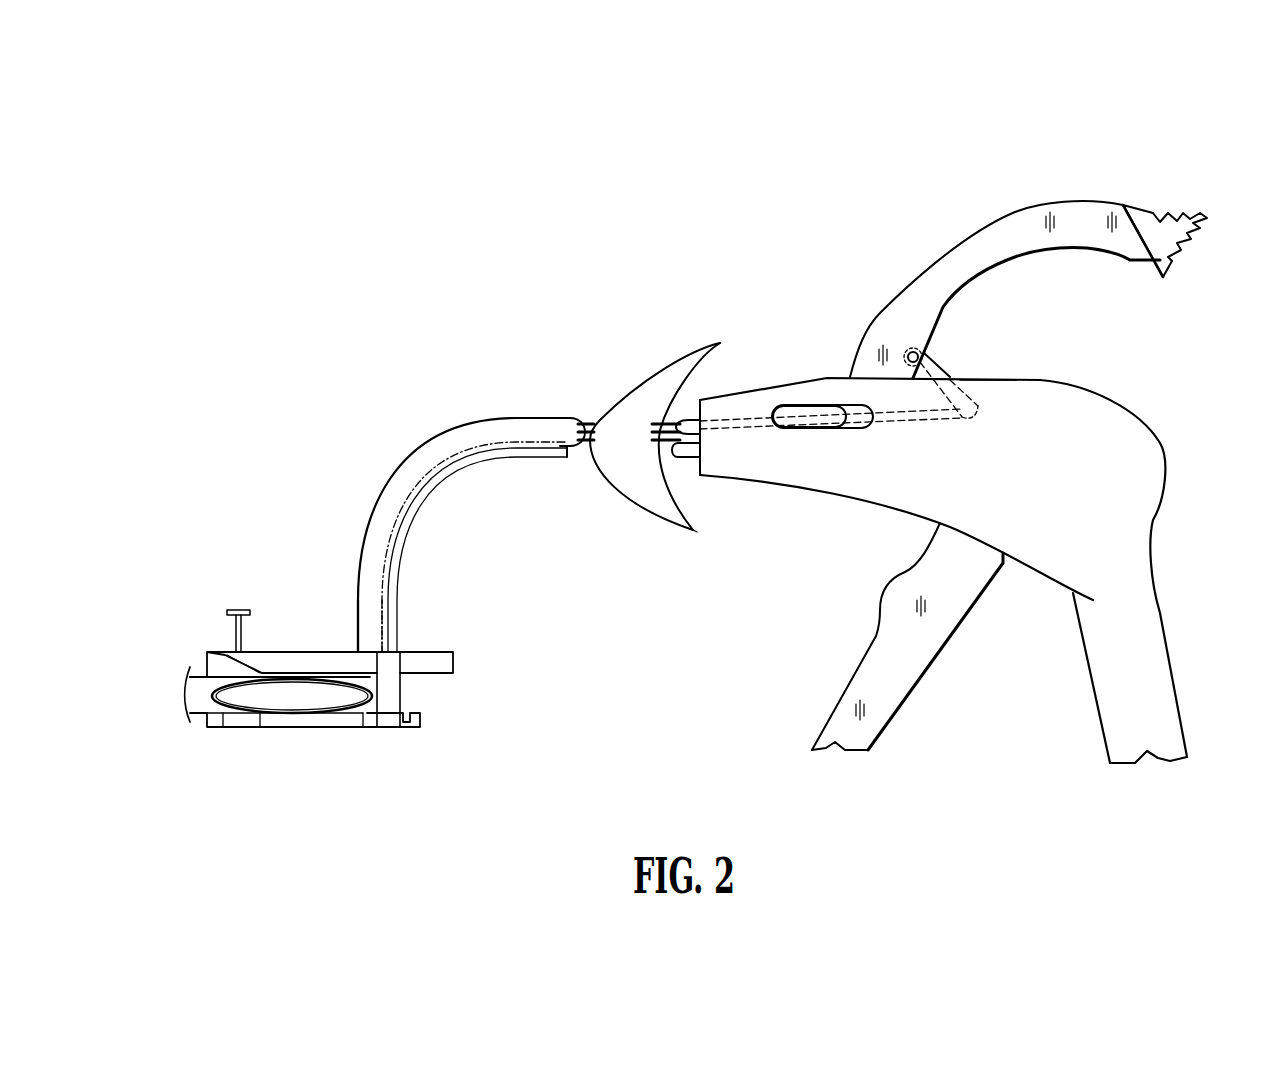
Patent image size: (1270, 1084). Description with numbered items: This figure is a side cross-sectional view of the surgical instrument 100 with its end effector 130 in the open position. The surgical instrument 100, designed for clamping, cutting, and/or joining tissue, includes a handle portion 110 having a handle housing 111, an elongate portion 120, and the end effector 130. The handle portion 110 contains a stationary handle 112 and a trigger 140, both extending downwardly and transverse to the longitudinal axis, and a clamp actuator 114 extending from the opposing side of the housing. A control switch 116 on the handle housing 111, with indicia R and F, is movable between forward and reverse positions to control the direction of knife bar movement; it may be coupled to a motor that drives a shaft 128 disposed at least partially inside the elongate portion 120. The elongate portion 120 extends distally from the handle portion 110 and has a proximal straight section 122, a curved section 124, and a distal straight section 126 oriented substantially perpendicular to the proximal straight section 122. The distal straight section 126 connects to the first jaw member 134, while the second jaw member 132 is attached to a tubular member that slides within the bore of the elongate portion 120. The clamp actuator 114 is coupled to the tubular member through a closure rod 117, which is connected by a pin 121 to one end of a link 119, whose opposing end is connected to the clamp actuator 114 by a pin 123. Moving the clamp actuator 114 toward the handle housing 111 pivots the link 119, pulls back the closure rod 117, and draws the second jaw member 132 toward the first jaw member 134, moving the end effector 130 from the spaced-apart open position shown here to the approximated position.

The surgical instrument 100 is at (833, 163).
The handle portion 110 is at (1156, 153).
The handle housing 111 is at (1113, 447).
The stationary handle 112 is at (1163, 620).
The clamp actuator 114 is at (1095, 220).
The control switch 116 is at (811, 405).
The closure rod 117 is at (720, 343).
The link 119 is at (953, 374).
The elongate portion 120 is at (502, 378).
The pin 121 is at (1010, 380).
The proximal straight section 122 is at (562, 417).
The pin 123 is at (930, 350).
The curved section 124 is at (447, 465).
The distal straight section 126 is at (373, 583).
The shaft 128 is at (709, 541).
The end effector 130 is at (181, 608).
The second jaw member 132 is at (303, 660).
The first jaw member 134 is at (297, 718).
The trigger 140 is at (883, 668).